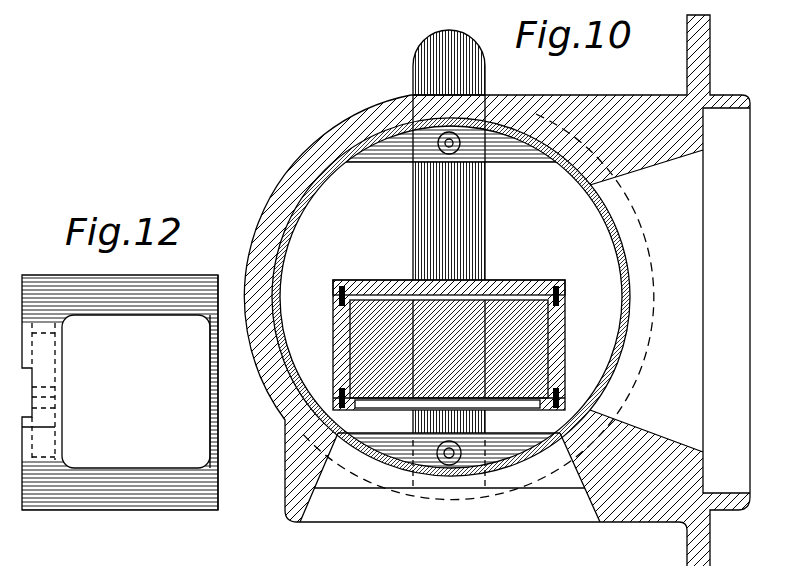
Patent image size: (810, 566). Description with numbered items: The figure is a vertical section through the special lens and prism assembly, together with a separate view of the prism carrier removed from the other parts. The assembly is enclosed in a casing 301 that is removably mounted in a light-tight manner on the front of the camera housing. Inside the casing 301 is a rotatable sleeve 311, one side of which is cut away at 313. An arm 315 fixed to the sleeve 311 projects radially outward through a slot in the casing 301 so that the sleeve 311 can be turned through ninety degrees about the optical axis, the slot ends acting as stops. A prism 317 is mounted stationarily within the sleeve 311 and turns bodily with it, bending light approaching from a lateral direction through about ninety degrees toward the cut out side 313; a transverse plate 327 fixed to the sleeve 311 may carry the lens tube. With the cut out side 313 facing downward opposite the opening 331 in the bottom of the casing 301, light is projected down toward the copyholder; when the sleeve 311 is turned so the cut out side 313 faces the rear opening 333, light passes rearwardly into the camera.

In FIG. 10, the casing 301 is at (298, 166).
In FIG. 10, the rotatable sleeve 311 is at (292, 231).
In FIG. 12, the rotatable sleeve 311 is at (47, 279).
In FIG. 10, the cut out side 313 is at (366, 445).
In FIG. 12, the cut out side 313 is at (116, 318).
In FIG. 10, the arm 315 is at (484, 58).
In FIG. 10, the prism 317 is at (513, 310).
In FIG. 12, the transverse plate 327 is at (218, 468).
In FIG. 10, the opening in the bottom of the casing 331 is at (577, 490).
In FIG. 10, the opening in the rear of the casing 333 is at (650, 163).